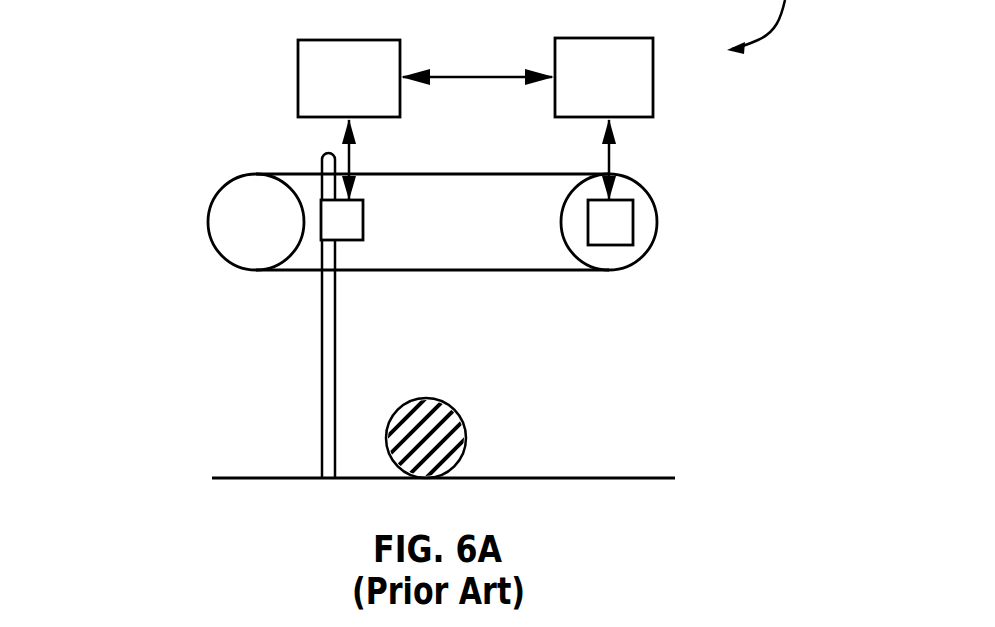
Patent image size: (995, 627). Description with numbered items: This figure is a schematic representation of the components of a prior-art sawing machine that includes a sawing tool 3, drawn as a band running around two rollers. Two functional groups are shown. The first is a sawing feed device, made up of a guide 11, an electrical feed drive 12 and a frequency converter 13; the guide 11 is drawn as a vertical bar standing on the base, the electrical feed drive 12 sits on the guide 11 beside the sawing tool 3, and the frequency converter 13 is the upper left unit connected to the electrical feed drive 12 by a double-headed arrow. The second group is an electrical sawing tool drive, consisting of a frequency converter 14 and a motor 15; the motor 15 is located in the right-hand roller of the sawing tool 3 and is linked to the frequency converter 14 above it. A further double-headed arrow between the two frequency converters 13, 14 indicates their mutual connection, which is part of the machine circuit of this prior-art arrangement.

The sawing tool 3 is at (462, 268).
The guide 11 is at (323, 355).
The electrical feed drive 12 is at (321, 218).
The frequency converter 13 is at (298, 70).
The frequency converter 14 is at (653, 100).
The motor 15 is at (607, 245).